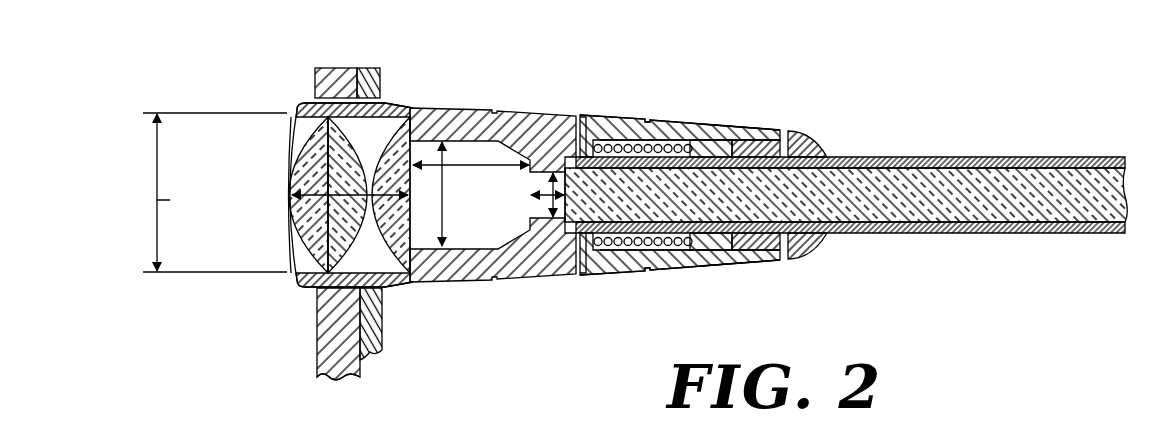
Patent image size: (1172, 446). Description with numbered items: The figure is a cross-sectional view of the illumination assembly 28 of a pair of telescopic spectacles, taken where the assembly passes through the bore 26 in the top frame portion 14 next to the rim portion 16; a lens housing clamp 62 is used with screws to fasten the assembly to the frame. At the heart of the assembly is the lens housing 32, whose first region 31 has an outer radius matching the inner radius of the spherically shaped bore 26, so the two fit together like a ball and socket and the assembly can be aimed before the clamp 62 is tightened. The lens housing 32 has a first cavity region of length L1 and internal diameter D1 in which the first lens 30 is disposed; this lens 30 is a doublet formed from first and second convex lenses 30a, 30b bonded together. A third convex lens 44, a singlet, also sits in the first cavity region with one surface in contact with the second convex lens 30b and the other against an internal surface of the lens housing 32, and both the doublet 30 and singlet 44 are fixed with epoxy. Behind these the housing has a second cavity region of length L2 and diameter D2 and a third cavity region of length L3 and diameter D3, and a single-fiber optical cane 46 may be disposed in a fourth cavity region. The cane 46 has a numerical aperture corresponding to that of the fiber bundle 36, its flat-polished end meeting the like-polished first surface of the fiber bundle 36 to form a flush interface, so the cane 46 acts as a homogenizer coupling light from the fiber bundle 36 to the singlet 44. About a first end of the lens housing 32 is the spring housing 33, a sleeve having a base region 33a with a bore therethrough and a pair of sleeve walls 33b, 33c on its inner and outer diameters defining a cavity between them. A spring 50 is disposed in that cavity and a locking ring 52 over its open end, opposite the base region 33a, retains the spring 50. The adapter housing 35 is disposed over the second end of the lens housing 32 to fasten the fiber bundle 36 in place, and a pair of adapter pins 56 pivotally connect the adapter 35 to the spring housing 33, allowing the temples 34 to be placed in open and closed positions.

The top frame portion 14 is at (337, 67).
The rim portion 16 is at (351, 366).
The bore 26 is at (304, 91).
The illumination assembly 28 is at (889, 59).
The first lens 30 is at (283, 195).
The first convex lens 30a is at (307, 145).
The second convex lens 30b is at (327, 173).
The first region of the lens housing 31 is at (398, 96).
The lens housing 32 is at (473, 107).
The spring housing 33 is at (698, 158).
The base region 33a is at (583, 115).
The sleeve wall 33b is at (725, 128).
The sleeve wall 33c is at (620, 120).
The temple 34 is at (857, 233).
The adapter housing 35 is at (823, 232).
The fiber bundle 36 is at (943, 210).
The third convex lens 44 is at (393, 245).
The cane 46 is at (633, 203).
The spring 50 is at (635, 140).
The locking ring 52 is at (723, 268).
The adapter pin 56 is at (795, 130).
The lens housing clamp 62 is at (368, 67).
The internal diameter of first cavity region D1 is at (215, 192).
The diameter of second cavity region D2 is at (443, 212).
The diameter of third cavity region D3 is at (553, 210).
The length of first cavity region L1 is at (287, 215).
The length of second cavity region L2 is at (486, 170).
The length of third cavity region L3 is at (552, 195).